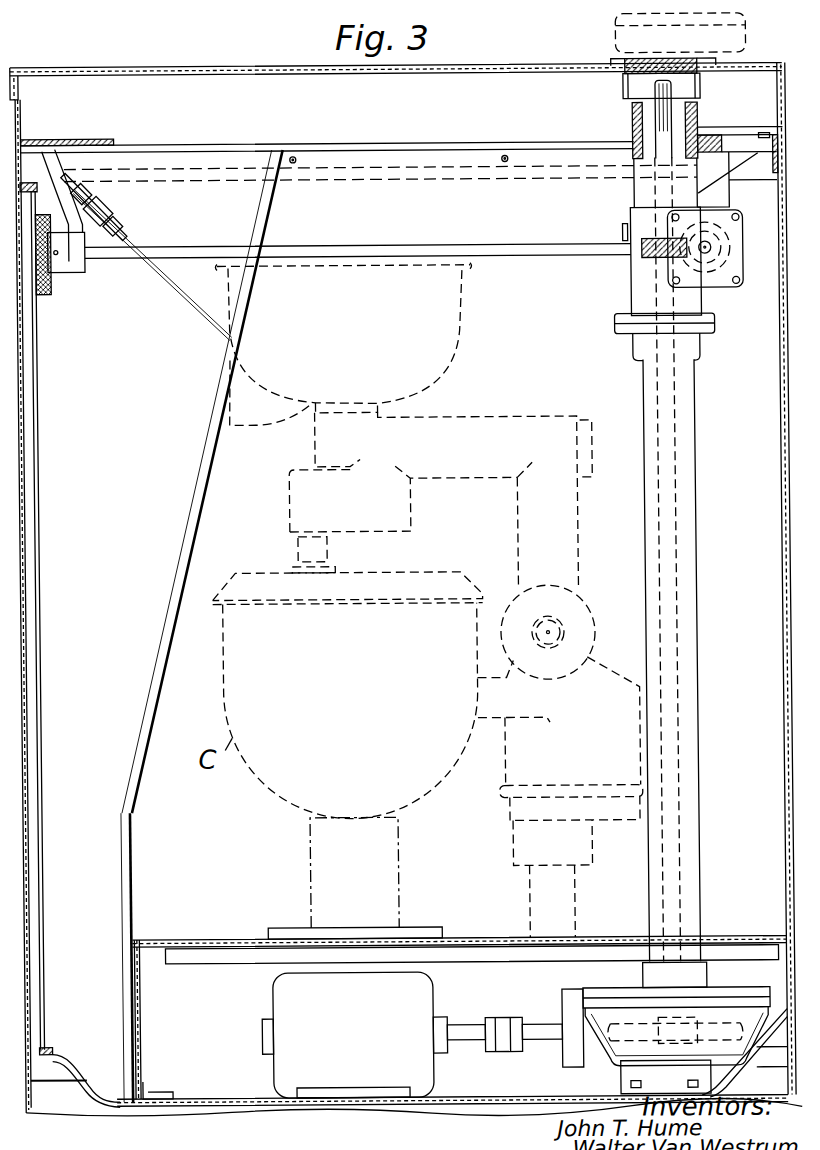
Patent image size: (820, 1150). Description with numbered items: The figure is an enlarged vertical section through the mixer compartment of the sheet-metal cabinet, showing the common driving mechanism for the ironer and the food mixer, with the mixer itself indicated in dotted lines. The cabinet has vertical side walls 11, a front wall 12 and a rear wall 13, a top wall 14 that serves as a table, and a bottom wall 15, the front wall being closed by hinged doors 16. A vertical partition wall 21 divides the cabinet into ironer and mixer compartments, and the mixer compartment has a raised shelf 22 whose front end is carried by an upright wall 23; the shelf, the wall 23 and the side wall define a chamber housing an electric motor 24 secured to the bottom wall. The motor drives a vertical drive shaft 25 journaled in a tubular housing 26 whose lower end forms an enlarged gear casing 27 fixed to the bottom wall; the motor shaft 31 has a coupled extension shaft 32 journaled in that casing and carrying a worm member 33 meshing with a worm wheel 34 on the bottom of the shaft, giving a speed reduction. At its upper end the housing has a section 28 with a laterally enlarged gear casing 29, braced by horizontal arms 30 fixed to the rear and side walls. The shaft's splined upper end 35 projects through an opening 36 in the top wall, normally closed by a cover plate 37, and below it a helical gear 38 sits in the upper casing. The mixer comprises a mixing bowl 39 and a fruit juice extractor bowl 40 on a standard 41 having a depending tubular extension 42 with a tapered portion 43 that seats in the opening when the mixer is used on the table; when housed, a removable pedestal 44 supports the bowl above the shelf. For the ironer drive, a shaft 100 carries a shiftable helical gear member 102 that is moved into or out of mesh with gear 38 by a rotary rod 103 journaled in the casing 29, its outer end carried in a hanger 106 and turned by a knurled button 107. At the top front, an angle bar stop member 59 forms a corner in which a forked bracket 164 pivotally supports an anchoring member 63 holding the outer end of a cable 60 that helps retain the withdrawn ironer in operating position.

The side wall 11 is at (85, 970).
The front wall 12 is at (20, 112).
The rear wall 13 is at (775, 705).
The top wall 14 is at (274, 70).
The bottom wall 15 is at (436, 1111).
The hinged door 16 is at (31, 1005).
The partition wall 21 is at (201, 542).
The shelf 22 is at (216, 942).
The upright wall 23 is at (129, 1016).
The electric motor 24 is at (434, 991).
The vertical drive shaft 25 is at (676, 687).
The tubular housing 26 is at (704, 762).
The gear casing 27 is at (724, 1017).
The section 28 is at (630, 298).
The gear casing 29 is at (745, 236).
The bracing and supporting arm 30 is at (734, 135).
The driving shaft 31 is at (458, 1043).
The extension shaft 32 is at (536, 1044).
The worm member 33 is at (684, 1015).
The worm wheel 34 is at (616, 1049).
The splined portion 35 is at (671, 123).
The opening 36 is at (626, 104).
The cover plate 37 is at (626, 84).
The helical gear 38 is at (640, 252).
The mixing bowl 39 is at (274, 792).
The fruit juice extractor bowl 40 is at (465, 337).
The standard 41 is at (590, 522).
The depending extension 42 is at (580, 899).
The tapered portion 43 is at (616, 64).
The supporting pedestal 44 is at (409, 859).
The angle bar stop member 59 is at (47, 148).
The cable member 60 is at (190, 302).
The anchoring member 63 is at (135, 208).
The shaft 100 is at (708, 268).
The helical gear member 102 is at (712, 262).
The rotary rod 103 is at (530, 252).
The hanger 106 is at (78, 273).
The knurled button 107 is at (44, 295).
The forked bracket 164 is at (75, 178).